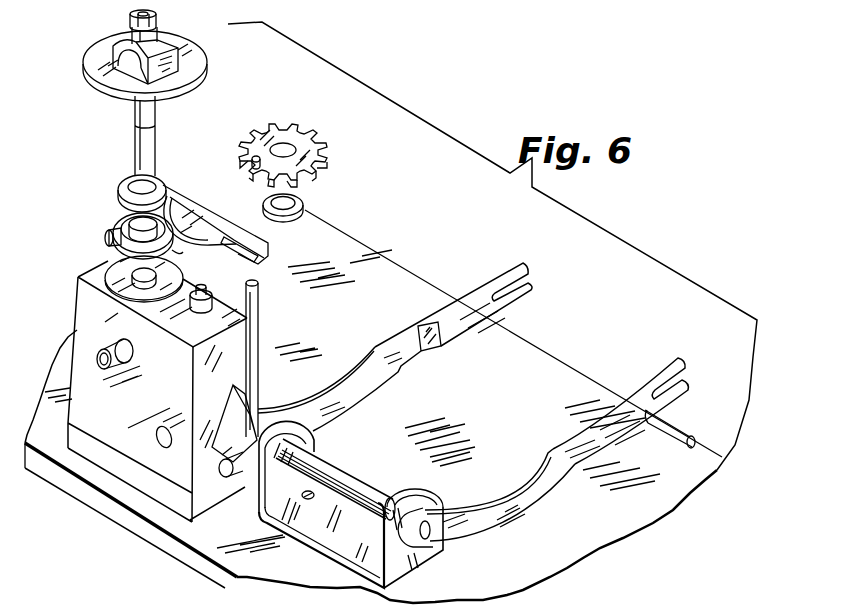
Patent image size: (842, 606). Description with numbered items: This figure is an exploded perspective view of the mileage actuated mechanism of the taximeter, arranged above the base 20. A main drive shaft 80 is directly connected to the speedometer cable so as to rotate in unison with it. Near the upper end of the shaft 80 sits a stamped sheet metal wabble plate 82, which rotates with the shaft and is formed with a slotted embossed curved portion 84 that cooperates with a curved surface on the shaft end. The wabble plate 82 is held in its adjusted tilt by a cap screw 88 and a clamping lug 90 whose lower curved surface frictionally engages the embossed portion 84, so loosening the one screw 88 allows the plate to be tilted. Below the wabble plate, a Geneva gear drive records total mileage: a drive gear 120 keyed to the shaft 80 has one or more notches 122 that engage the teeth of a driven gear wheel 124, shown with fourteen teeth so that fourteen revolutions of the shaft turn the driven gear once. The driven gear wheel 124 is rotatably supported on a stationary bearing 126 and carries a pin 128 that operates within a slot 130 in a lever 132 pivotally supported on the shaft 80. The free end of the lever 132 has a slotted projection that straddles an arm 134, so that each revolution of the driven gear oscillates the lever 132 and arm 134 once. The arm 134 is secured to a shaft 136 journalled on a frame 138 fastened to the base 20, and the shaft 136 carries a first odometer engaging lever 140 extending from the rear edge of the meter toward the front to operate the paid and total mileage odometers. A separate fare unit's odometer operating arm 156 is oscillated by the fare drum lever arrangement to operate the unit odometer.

The base 20 is at (548, 362).
The main drive shaft 80 is at (133, 139).
The wabble plate 82 is at (186, 35).
The slotted embossed curved portion 84 is at (197, 63).
The cap screw 88 is at (130, 21).
The clamping lug 90 is at (120, 48).
The drive gear 120 is at (122, 224).
The notch 122 is at (121, 236).
The driven gear wheel 124 is at (285, 127).
The stationary bearing 126 is at (196, 308).
The pin 128 is at (253, 165).
The slot 130 is at (200, 218).
The lever 132 is at (268, 222).
The arm 134 is at (258, 323).
The shaft 136 is at (339, 477).
The frame 138 is at (263, 498).
The first odometer engaging lever 140 is at (552, 493).
The fare unit's odometer operating arm 156 is at (430, 325).